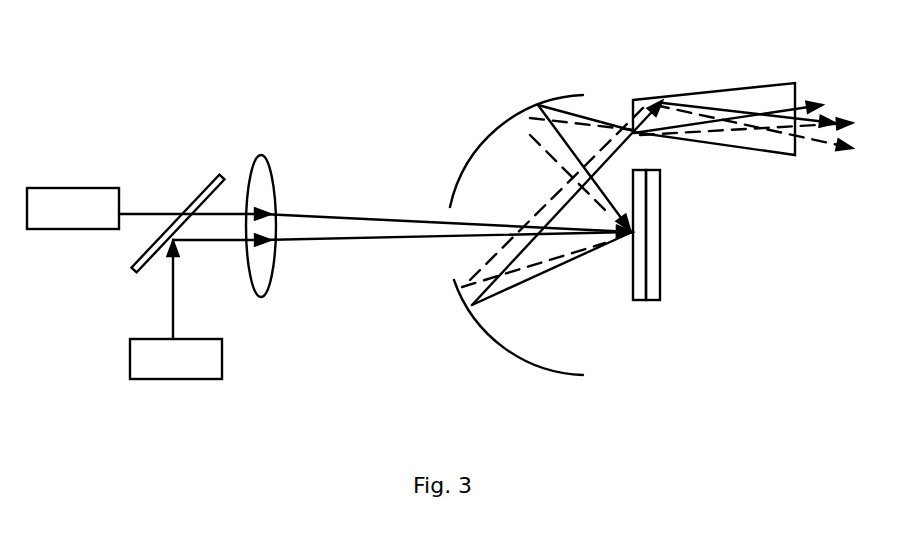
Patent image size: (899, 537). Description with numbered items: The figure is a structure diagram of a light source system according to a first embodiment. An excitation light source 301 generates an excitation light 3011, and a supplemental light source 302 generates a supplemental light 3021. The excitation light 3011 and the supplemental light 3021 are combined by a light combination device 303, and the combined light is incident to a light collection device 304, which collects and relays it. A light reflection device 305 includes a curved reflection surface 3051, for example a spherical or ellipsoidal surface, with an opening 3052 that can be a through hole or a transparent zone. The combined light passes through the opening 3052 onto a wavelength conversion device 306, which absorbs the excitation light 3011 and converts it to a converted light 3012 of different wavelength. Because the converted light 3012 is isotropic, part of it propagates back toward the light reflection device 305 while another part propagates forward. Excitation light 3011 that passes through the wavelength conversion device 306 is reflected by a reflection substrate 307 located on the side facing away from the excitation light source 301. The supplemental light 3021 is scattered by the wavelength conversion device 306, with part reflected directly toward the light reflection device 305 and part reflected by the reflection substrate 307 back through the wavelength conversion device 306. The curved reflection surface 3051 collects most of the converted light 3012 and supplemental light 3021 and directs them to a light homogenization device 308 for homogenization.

The excitation light source 301 is at (80, 187).
The excitation light 3011 is at (137, 212).
The supplemental light source 302 is at (168, 379).
The supplemental light 3021 is at (173, 293).
The light combination device 303 is at (213, 177).
The light collection device 304 is at (262, 158).
The light reflection device 305 is at (476, 200).
The curved reflection surface 3051 is at (532, 101).
The opening 3052 is at (450, 263).
The converted light 3012 is at (547, 207).
The wavelength conversion device 306 is at (638, 298).
The reflection substrate 307 is at (658, 300).
The light homogenization device 308 is at (737, 100).